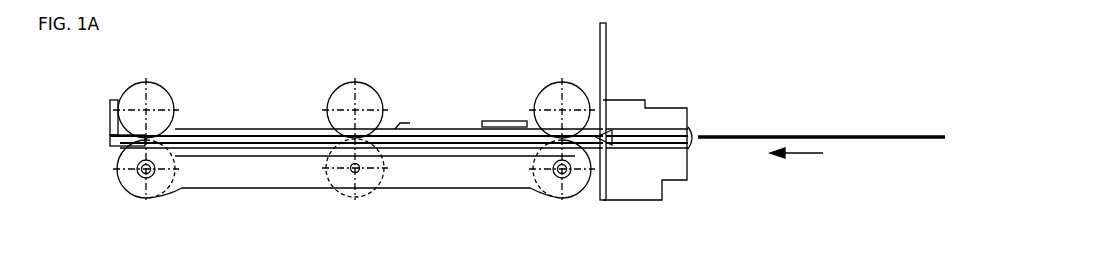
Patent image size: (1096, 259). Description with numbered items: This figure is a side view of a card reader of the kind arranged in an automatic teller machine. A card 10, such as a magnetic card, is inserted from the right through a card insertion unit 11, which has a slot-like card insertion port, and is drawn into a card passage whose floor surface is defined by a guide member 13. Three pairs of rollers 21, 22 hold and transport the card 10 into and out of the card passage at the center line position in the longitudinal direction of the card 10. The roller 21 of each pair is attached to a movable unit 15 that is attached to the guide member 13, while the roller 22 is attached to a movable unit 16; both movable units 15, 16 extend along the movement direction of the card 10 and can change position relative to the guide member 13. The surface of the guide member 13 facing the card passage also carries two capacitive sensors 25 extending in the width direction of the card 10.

The card 10 is at (843, 135).
The card insertion unit 11 is at (667, 118).
The guide member 13 is at (282, 157).
The movable unit 15 is at (443, 185).
The movable unit 16 is at (433, 127).
The roller 21 is at (125, 190).
The roller 22 is at (152, 92).
The capacitive sensor 25 is at (212, 152).